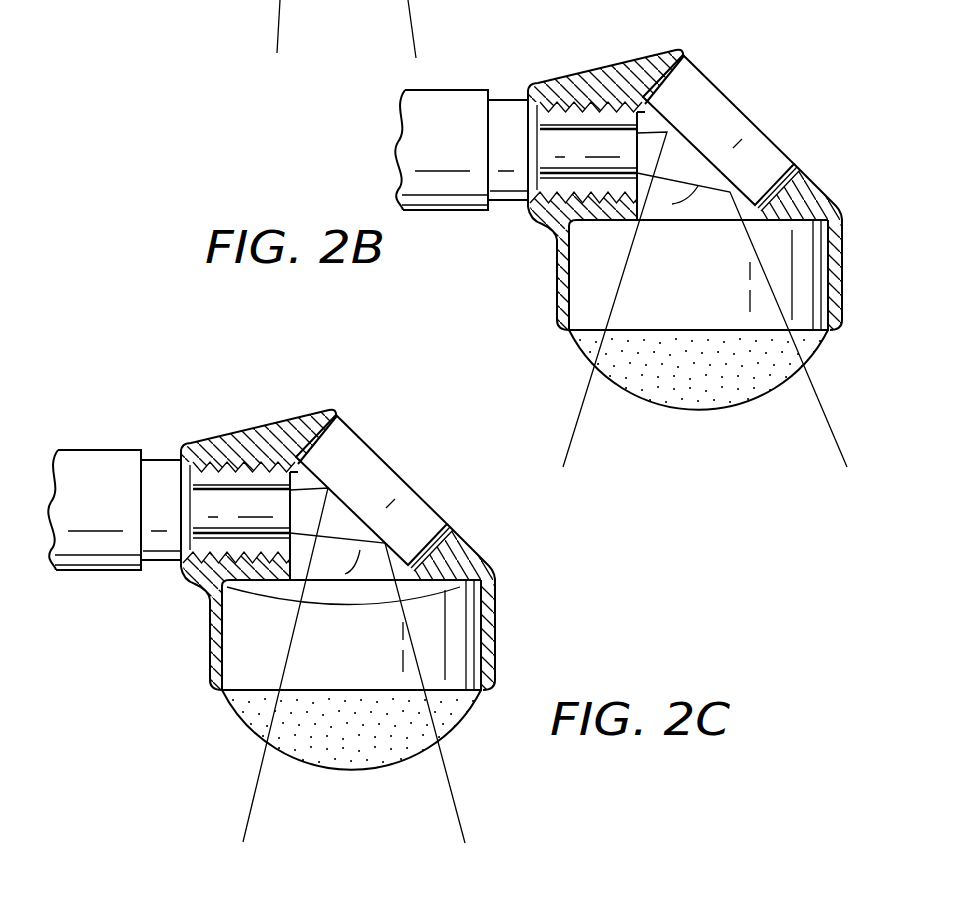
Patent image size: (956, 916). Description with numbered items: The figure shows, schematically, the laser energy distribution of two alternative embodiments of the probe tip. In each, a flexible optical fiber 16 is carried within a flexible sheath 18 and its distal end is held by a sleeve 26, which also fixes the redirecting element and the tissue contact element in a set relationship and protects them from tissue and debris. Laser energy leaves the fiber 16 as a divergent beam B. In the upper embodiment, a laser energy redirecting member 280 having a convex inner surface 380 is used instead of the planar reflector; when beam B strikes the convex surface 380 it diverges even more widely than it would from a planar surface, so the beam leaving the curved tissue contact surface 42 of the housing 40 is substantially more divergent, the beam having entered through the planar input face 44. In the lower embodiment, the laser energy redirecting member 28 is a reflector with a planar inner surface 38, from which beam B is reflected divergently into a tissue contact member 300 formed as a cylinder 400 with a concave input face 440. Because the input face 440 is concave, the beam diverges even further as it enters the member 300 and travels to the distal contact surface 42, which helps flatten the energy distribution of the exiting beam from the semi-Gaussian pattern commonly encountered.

In FIG. 2B, the optical fiber 16 is at (582, 147).
In FIG. 2C, the optical fiber 16 is at (214, 541).
In FIG. 2B, the flexible sheath 18 is at (470, 100).
In FIG. 2C, the flexible sheath 18 is at (90, 548).
In FIG. 2B, the sleeve 26 is at (634, 60).
In FIG. 2C, the sleeve 26 is at (258, 482).
In FIG. 2C, the laser energy redirecting member 28 is at (387, 490).
In FIG. 2C, the planar inner surface 38 is at (443, 536).
In FIG. 2B, the housing 40 is at (592, 240).
In FIG. 2B, the curved tissue contact surface 42 is at (580, 352).
In FIG. 2C, the curved tissue contact surface 42 is at (375, 746).
In FIG. 2B, the planar input face 44 is at (708, 221).
In FIG. 2B, the laser energy redirecting member 280 is at (735, 128).
In FIG. 2B, the convex inner surface 380 is at (712, 172).
In FIG. 2C, the cylinder 400 is at (409, 635).
In FIG. 2C, the concave input face 440 is at (524, 555).
In FIG. 2C, the tissue contact member 300 is at (354, 691).
In FIG. 2B, the beam B is at (672, 200).
In FIG. 2C, the beam B is at (337, 572).